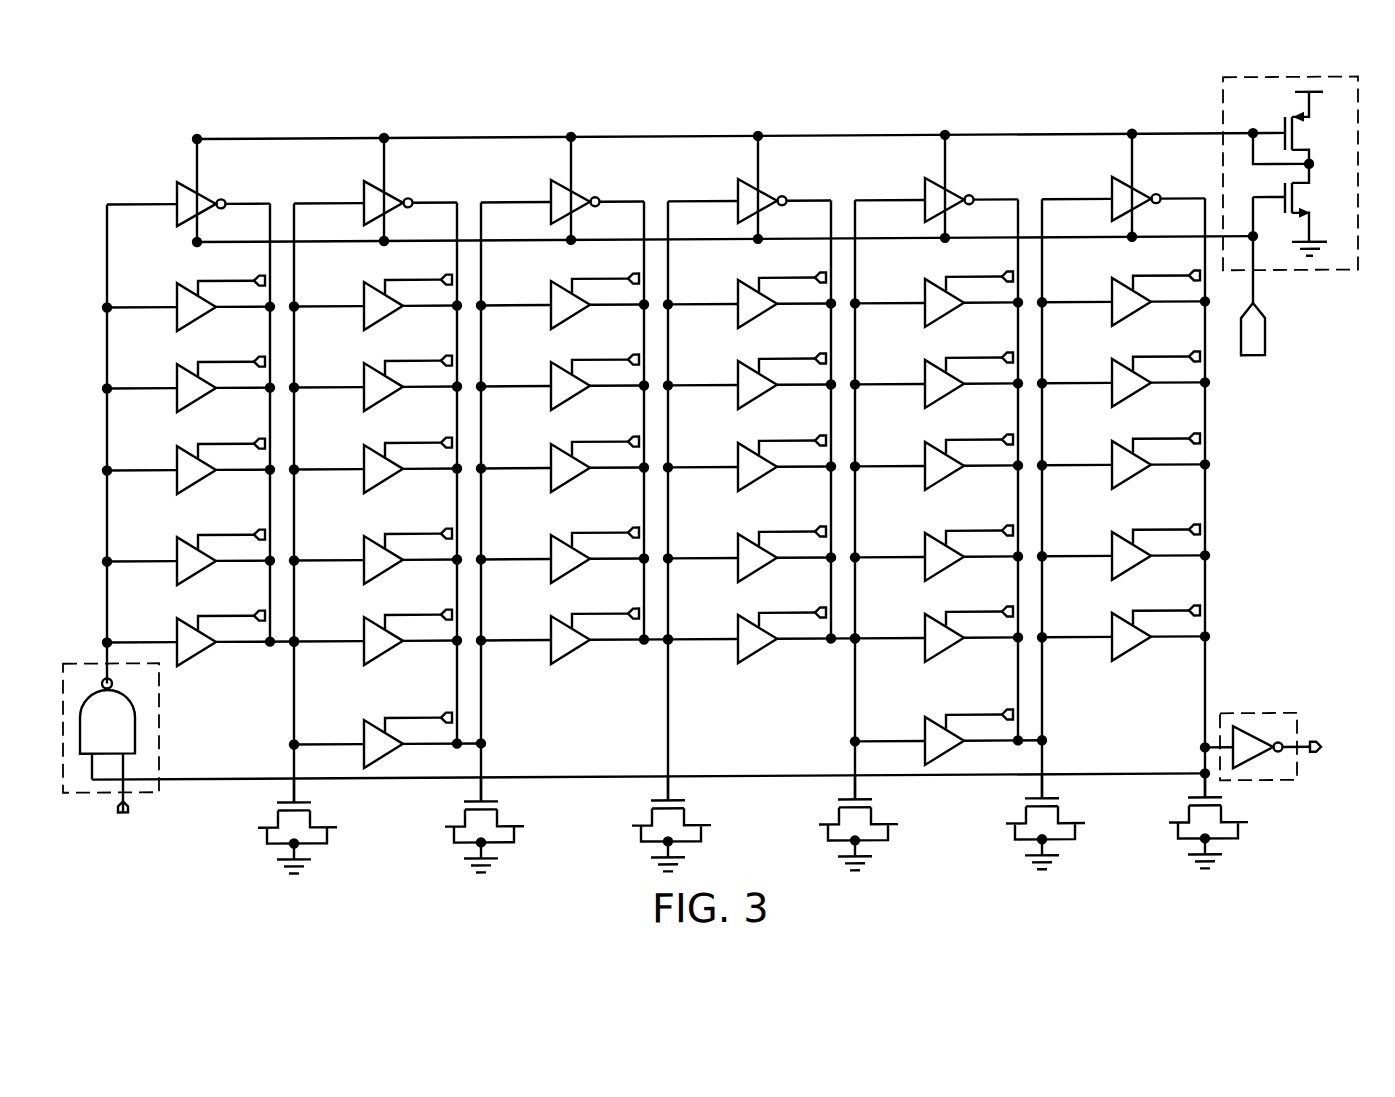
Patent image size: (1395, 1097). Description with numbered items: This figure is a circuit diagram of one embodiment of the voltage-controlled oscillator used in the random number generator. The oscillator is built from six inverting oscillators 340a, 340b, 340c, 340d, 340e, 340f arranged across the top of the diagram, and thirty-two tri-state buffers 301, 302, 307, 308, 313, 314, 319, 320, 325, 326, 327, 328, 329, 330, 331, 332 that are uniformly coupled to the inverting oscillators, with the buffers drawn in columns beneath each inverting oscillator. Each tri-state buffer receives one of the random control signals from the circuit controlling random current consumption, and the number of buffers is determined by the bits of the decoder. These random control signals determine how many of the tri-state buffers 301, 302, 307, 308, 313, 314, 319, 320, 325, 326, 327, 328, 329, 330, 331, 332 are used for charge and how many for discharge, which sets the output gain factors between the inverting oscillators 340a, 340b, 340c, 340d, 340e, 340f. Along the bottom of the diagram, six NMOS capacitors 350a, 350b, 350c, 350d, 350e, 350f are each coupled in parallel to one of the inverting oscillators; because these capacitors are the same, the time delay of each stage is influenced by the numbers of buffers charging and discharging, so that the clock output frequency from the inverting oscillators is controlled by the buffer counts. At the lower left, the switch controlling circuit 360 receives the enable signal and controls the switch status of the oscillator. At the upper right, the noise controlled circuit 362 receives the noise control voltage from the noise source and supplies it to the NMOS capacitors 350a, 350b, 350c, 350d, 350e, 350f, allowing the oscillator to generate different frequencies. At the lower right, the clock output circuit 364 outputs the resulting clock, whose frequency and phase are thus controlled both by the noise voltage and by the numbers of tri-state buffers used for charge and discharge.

The tri-state buffer 301 is at (180, 286).
The tri-state buffer 302 is at (367, 286).
The tri-state buffer 307 is at (180, 367).
The tri-state buffer 308 is at (367, 367).
The tri-state buffer 313 is at (180, 449).
The tri-state buffer 314 is at (367, 449).
The tri-state buffer 319 is at (180, 540).
The tri-state buffer 320 is at (367, 540).
The tri-state buffer 325 is at (180, 621).
The tri-state buffer 326 is at (367, 621).
The tri-state buffer 327 is at (554, 621).
The tri-state buffer 328 is at (741, 621).
The tri-state buffer 329 is at (928, 621).
The tri-state buffer 330 is at (1115, 621).
The tri-state buffer 331 is at (367, 724).
The tri-state buffer 332 is at (928, 724).
The inverting oscillator 340a is at (181, 185).
The inverting oscillator 340b is at (368, 185).
The inverting oscillator 340c is at (555, 185).
The inverting oscillator 340d is at (742, 185).
The inverting oscillator 340e is at (929, 185).
The inverting oscillator 340f is at (1116, 185).
The NMOS capacitor 350a is at (277, 818).
The NMOS capacitor 350b is at (464, 818).
The NMOS capacitor 350c is at (651, 818).
The NMOS capacitor 350d is at (838, 818).
The NMOS capacitor 350e is at (1025, 818).
The NMOS capacitor 350f is at (1188, 818).
The switch controlling circuit 360 is at (159, 726).
The noise controlled circuit 362 is at (1223, 103).
The clock output circuit 364 is at (1222, 719).